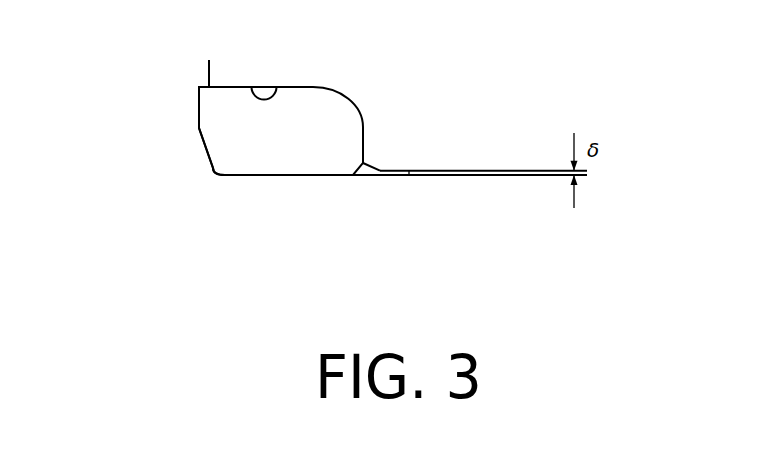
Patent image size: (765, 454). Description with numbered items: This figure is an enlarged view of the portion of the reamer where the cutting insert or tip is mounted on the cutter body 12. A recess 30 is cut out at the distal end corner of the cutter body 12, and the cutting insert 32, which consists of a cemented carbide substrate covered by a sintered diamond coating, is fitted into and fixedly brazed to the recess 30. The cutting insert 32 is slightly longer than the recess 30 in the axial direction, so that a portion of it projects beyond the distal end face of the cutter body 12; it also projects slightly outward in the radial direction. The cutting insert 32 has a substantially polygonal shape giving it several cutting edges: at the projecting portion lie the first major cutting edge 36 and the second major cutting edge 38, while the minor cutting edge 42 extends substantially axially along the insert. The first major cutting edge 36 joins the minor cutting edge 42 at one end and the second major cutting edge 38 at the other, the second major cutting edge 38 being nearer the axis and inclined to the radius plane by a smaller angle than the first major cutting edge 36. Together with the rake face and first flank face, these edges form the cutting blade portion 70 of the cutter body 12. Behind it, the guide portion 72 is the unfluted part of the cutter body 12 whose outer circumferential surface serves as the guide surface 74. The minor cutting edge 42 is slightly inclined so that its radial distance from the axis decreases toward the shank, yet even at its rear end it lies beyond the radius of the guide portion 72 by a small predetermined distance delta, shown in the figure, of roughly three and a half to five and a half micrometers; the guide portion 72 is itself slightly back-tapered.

The cutter body 12 is at (498, 217).
The recess 30 is at (253, 87).
The cutting insert 32 is at (287, 156).
The first major cutting edge 36 is at (213, 175).
The second major cutting edge 38 is at (205, 150).
The minor cutting edge 42 is at (303, 172).
The cutting blade portion 70 is at (215, 200).
The guide portion 72 is at (437, 182).
The guide surface 74 is at (410, 172).